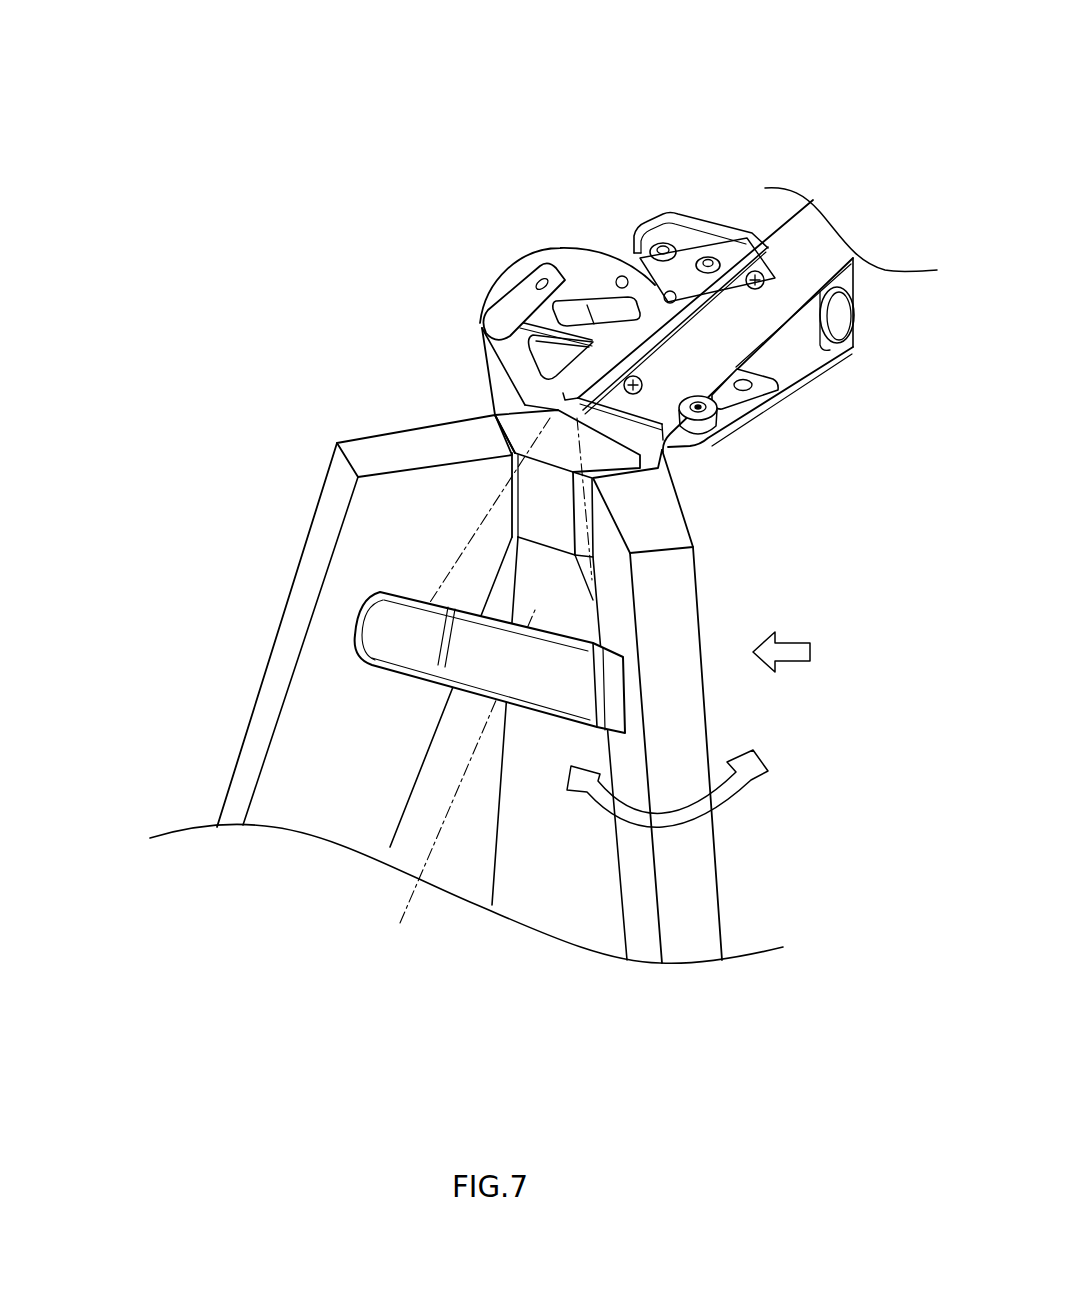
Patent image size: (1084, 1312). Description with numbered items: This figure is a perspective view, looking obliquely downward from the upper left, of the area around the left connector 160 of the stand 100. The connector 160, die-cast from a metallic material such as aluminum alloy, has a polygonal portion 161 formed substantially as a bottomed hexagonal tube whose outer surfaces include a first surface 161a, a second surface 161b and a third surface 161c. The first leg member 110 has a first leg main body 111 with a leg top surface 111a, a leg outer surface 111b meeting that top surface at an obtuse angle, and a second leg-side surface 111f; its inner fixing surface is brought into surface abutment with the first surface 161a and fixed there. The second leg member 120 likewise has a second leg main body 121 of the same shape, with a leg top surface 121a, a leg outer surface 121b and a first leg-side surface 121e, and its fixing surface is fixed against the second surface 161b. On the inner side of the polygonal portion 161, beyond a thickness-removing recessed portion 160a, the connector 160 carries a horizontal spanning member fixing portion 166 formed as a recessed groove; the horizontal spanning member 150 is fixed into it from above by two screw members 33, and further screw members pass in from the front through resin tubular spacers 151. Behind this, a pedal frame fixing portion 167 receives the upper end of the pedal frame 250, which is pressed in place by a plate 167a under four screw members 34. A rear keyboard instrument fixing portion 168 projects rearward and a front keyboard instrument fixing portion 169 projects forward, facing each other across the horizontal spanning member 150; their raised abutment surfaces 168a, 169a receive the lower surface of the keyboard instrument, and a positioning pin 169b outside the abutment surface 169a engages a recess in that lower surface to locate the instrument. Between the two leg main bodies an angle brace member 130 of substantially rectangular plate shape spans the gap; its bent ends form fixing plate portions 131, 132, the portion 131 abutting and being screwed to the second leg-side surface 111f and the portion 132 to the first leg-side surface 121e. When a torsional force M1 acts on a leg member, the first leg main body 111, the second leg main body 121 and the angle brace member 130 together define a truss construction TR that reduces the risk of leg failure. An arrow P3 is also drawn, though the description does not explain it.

The stand 100 is at (322, 246).
The first leg member 110 is at (754, 744).
The first leg main body 111 is at (754, 744).
The leg top surface 111a is at (657, 525).
The leg outer surface 111b is at (665, 628).
The second leg-side surface 111f is at (637, 930).
The second leg member 120 is at (279, 654).
The second leg main body 121 is at (279, 654).
The leg top surface 121a is at (372, 458).
The leg outer surface 121b is at (327, 522).
The first leg-side surface 121e is at (325, 795).
The angle brace member 130 is at (501, 795).
The fixing plate portion 131 is at (580, 683).
The fixing plate portion 132 is at (380, 640).
The horizontal spanning member 150 is at (769, 238).
The resin tubular spacer 151 is at (838, 317).
The connector 160 is at (753, 306).
The thickness-removing recessed portion 160a is at (612, 417).
The polygonal portion 161 is at (567, 426).
The first surface 161a is at (726, 531).
The second surface 161b is at (518, 421).
The third surface 161c is at (541, 508).
The horizontal spanning member fixing portion 166 is at (771, 226).
The pedal frame fixing portion 167 is at (692, 201).
The plate 167a is at (687, 257).
The rear keyboard instrument fixing portion 168 is at (572, 290).
The abutment surface 168a is at (513, 313).
The front keyboard instrument fixing portion 169 is at (797, 433).
The abutment surface 169a is at (760, 383).
The positioning pin 169b is at (712, 417).
The pedal frame 250 is at (522, 268).
The screw member 33 is at (632, 375).
The screw member 34 is at (665, 247).
The truss construction TR is at (457, 783).
The direction P3 is at (800, 652).
The torsional force M1 is at (686, 787).